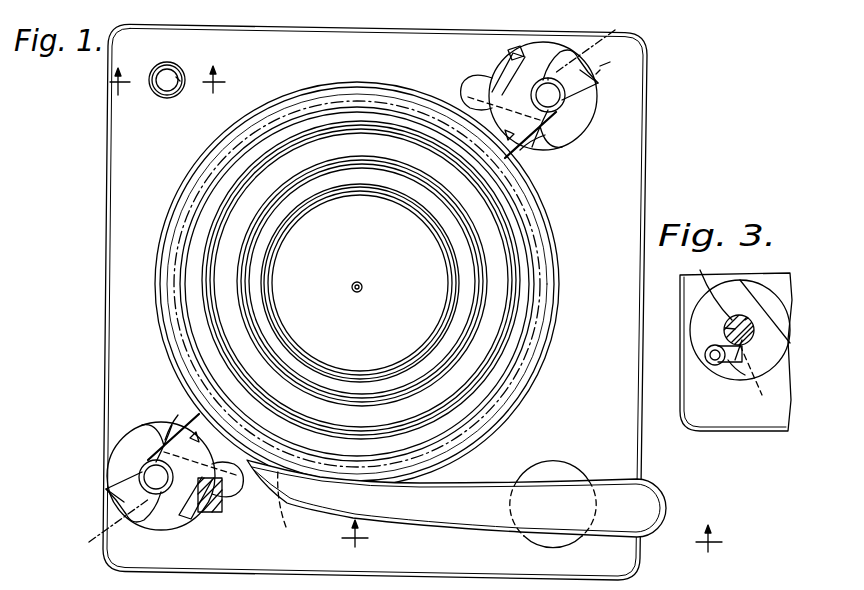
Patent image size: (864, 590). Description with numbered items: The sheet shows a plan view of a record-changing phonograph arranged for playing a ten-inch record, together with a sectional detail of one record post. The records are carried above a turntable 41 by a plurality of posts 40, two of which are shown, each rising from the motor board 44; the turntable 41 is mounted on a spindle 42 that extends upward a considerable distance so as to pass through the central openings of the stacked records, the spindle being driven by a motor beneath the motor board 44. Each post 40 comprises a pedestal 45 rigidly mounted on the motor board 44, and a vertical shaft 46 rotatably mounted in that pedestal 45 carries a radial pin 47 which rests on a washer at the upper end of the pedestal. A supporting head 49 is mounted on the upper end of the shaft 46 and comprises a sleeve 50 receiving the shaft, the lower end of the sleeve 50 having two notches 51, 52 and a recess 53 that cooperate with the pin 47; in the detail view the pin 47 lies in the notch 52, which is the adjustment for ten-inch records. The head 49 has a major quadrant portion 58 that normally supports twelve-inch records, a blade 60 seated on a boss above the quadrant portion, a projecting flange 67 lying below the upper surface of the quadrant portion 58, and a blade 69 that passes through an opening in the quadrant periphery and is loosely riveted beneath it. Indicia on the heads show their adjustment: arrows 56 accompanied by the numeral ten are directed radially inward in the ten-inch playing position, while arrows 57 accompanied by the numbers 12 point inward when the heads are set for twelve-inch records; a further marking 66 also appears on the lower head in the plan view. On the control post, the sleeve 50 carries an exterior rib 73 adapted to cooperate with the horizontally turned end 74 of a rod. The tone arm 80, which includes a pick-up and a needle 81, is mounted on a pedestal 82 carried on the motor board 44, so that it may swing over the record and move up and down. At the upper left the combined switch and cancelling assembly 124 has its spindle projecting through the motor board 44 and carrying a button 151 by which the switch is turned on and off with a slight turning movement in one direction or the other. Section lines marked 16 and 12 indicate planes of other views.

In FIG. 1, the numbers 12 is at (532, 548).
In FIG. 1, the section line indicator 16 is at (168, 86).
In FIG. 1, the post 40 is at (599, 97).
In FIG. 3, the post 40 is at (690, 355).
In FIG. 1, the turntable 41 is at (555, 237).
In FIG. 1, the spindle 42 is at (362, 283).
In FIG. 1, the motor board 44 is at (596, 392).
In FIG. 3, the motor board 44 is at (692, 426).
In FIG. 1, the pedestal 45 is at (577, 128).
In FIG. 3, the pedestal 45 is at (770, 362).
In FIG. 1, the vertical shaft 46 is at (610, 62).
In FIG. 3, the vertical shaft 46 is at (735, 360).
In FIG. 3, the radial pin 47 is at (740, 315).
In FIG. 1, the supporting head 49 is at (568, 104).
In FIG. 3, the supporting head 49 is at (746, 330).
In FIG. 3, the sleeve 50 is at (714, 346).
In FIG. 1, the notch 51 is at (548, 78).
In FIG. 3, the notch 51 is at (752, 379).
In FIG. 1, the notch 52 is at (495, 95).
In FIG. 3, the notch 52 is at (748, 318).
In FIG. 1, the recess 53 is at (590, 82).
In FIG. 3, the recess 53 is at (725, 328).
In FIG. 1, the arrows 56 is at (542, 130).
In FIG. 1, the arrows 57 is at (510, 54).
In FIG. 1, the quadrant portion 58 is at (508, 56).
In FIG. 1, the blade 60 is at (572, 56).
In FIG. 1, the index marking 66 is at (600, 70).
In FIG. 1, the projecting flange 67 is at (520, 150).
In FIG. 1, the blade 69 is at (470, 92).
In FIG. 3, the exterior rib 73 is at (705, 284).
In FIG. 3, the horizontally turned end 74 is at (728, 360).
In FIG. 1, the tone arm 80 is at (490, 509).
In FIG. 1, the needle 81 is at (291, 505).
In FIG. 1, the pedestal 82 is at (573, 480).
In FIG. 1, the combined switch and cancelling assembly 124 is at (160, 105).
In FIG. 1, the button 151 is at (180, 78).